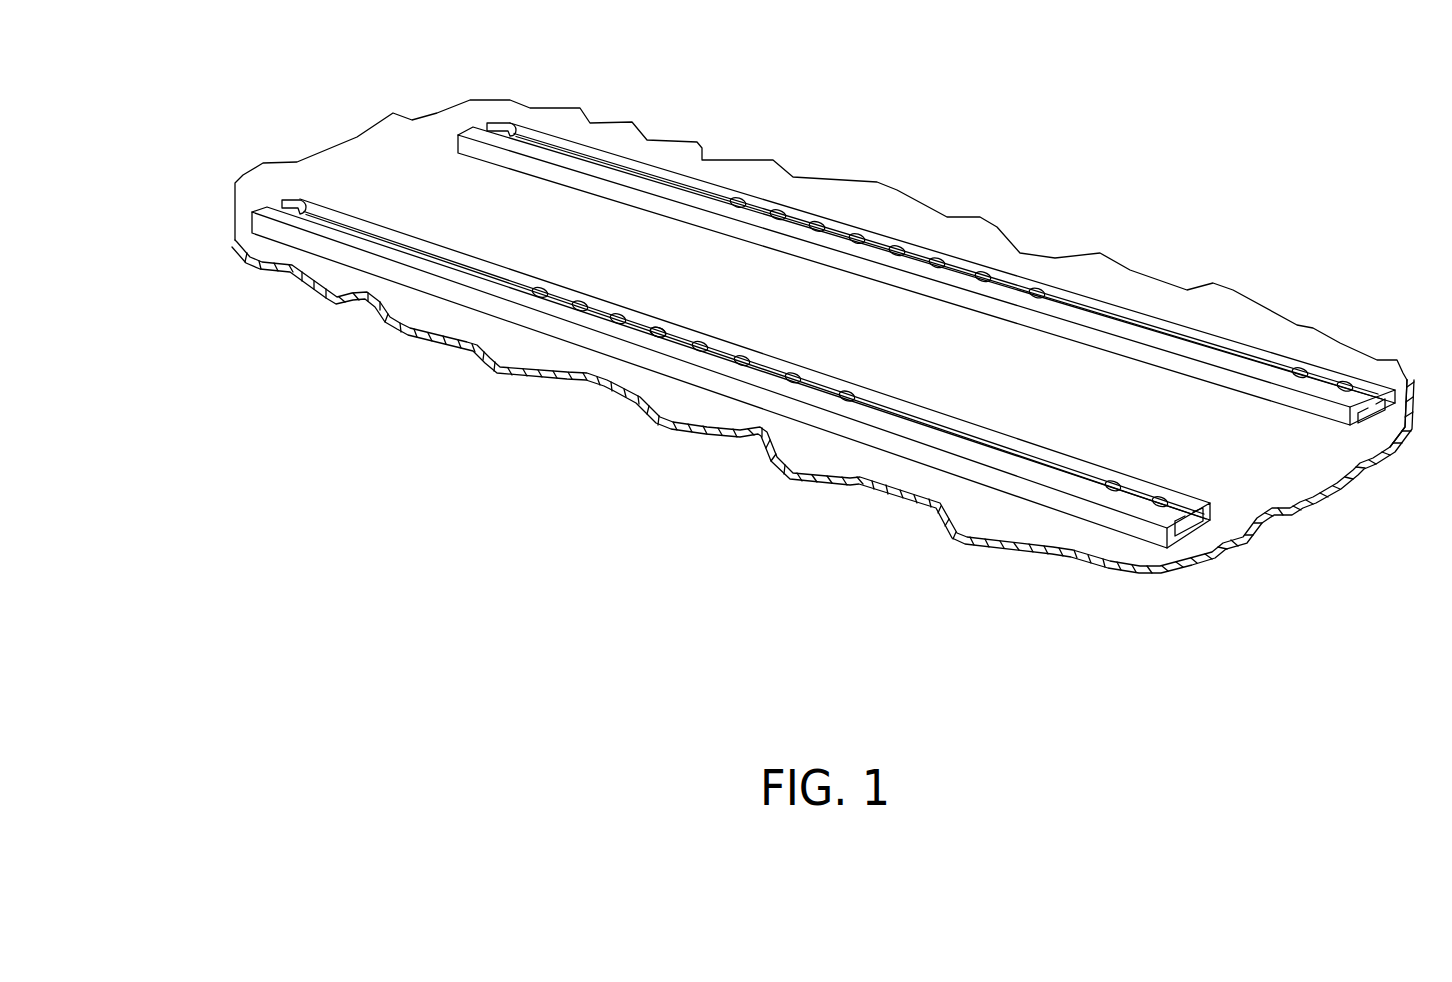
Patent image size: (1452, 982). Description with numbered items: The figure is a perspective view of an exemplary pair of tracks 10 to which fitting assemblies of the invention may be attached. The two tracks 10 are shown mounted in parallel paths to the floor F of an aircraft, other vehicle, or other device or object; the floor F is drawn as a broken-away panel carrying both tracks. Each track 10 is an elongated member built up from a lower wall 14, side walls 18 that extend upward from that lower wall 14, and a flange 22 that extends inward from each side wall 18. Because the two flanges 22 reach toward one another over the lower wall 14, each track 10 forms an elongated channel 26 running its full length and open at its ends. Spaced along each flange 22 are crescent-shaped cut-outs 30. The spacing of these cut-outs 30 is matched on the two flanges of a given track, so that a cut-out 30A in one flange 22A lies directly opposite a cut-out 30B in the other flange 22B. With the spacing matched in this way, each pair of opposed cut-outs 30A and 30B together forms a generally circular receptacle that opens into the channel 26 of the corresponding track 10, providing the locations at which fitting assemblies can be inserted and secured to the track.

The floor F is at (307, 265).
The track 10 is at (1120, 312).
The lower wall 14 is at (1381, 411).
The side wall 18 is at (1400, 397).
The flange 22 is at (1330, 372).
The flange 22A is at (1027, 472).
The flange 22B is at (880, 397).
The elongated channel 26 is at (1190, 522).
The crescent-shaped cut-out 30 is at (820, 217).
The cut-out 30A is at (653, 343).
The cut-out 30B is at (653, 333).